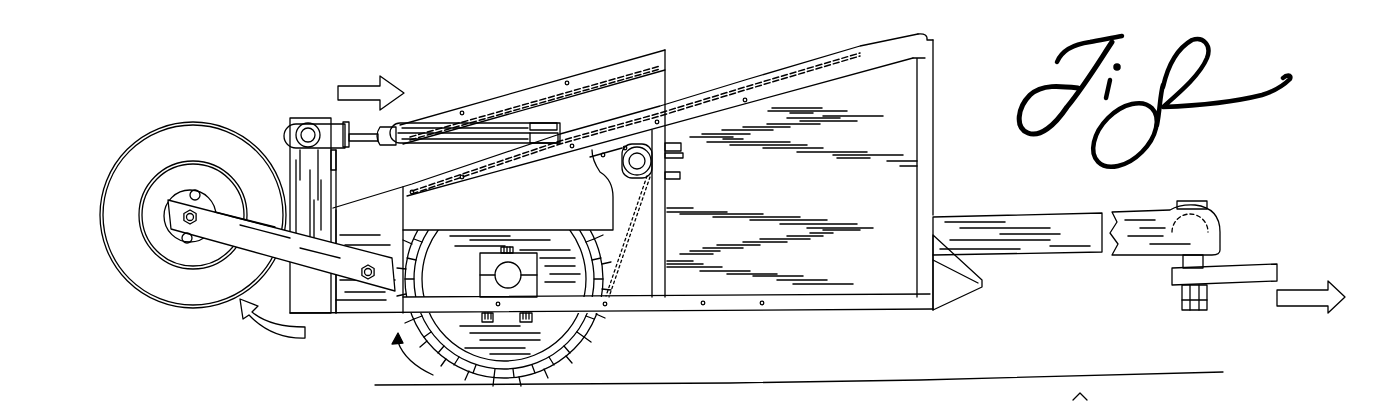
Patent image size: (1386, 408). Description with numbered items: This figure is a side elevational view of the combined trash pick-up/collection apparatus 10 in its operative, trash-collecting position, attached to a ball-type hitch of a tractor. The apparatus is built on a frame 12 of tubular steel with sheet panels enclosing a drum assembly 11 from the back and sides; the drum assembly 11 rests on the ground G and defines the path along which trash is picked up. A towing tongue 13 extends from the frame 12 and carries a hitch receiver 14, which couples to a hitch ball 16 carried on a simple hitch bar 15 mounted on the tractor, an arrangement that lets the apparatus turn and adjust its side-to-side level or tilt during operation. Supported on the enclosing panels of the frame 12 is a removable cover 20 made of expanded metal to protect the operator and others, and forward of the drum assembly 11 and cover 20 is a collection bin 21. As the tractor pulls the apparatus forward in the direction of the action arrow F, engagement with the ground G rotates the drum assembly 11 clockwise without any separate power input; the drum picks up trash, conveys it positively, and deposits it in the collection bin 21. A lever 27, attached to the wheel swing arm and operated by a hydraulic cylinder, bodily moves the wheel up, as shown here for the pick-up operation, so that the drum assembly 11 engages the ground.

The pick-up/collection apparatus 10 is at (686, 70).
The drum assembly 11 is at (606, 345).
The frame 12 is at (725, 303).
The towing tongue 13 is at (1037, 252).
The hitch receiver 14 is at (1131, 242).
The hitch bar 15 is at (1172, 273).
The hitch ball 16 is at (1210, 258).
The removable cover 20 is at (522, 88).
The collection bin 21 is at (773, 127).
The lever 27 is at (292, 175).
The action arrow F is at (1296, 298).
The ground G is at (882, 385).